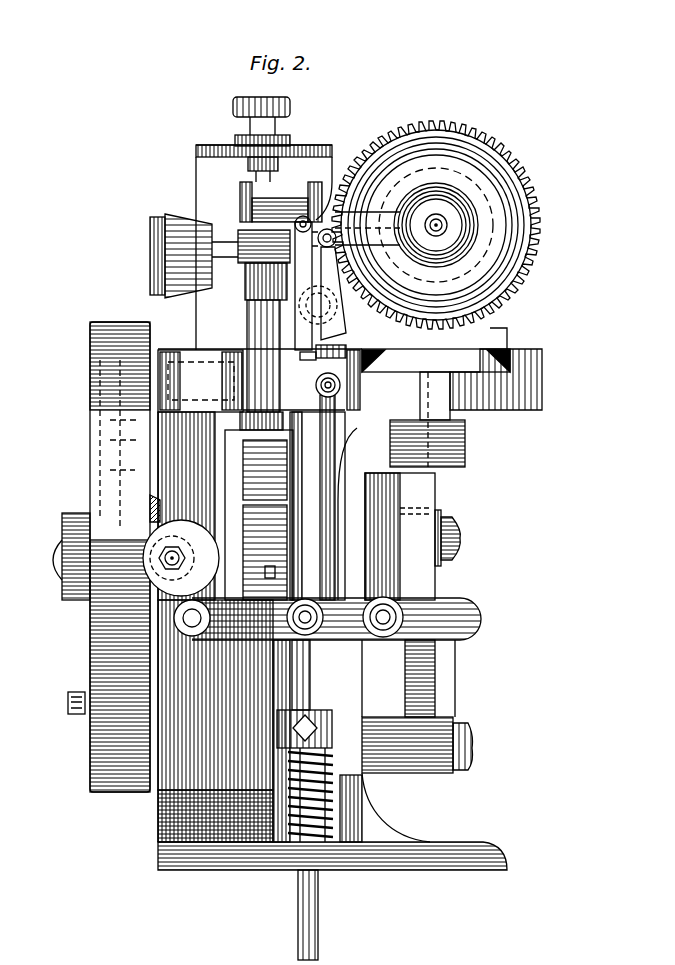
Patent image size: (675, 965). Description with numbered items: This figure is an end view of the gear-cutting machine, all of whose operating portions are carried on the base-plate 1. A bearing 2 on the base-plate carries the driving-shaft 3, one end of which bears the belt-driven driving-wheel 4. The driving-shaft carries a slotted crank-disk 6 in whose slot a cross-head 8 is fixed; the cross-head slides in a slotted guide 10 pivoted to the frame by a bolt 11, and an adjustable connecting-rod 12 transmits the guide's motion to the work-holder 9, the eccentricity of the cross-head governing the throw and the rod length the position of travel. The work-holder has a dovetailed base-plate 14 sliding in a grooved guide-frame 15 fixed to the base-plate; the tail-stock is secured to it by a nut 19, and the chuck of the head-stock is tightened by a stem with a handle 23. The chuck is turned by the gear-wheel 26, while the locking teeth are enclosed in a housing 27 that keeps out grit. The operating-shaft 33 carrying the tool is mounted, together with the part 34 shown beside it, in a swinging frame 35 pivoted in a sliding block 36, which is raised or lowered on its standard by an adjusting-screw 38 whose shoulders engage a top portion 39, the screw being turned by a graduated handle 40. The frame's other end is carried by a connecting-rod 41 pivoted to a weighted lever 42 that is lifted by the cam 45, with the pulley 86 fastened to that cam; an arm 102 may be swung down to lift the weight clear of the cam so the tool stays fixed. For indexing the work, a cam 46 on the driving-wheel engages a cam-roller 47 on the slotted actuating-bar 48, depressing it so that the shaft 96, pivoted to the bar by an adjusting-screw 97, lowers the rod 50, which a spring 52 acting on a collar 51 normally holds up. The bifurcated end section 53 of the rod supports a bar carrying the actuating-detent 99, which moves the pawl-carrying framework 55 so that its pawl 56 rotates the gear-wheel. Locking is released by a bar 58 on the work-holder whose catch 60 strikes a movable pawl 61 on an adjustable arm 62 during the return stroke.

The base-plate 1 is at (190, 793).
The bearing 2 is at (150, 500).
The driving-shaft 3 is at (345, 562).
The driving-wheel 4 is at (103, 498).
The slotted crank-disk 6 is at (392, 497).
The cross-head 8 is at (442, 520).
The work-holder 9 is at (509, 330).
The slotted guide 10 is at (456, 535).
The bolt 11 is at (463, 730).
The adjustable connecting-rod 12 is at (466, 440).
The dovetailed base-plate 14 is at (492, 362).
The guide-frame 15 is at (513, 393).
The nut 19 is at (193, 636).
The handle 23 is at (468, 217).
The gear-wheel 26 is at (531, 258).
The housing 27 is at (534, 228).
The operating-shaft 33 is at (233, 238).
The worm housing 34 is at (285, 212).
The swinging frame 35 is at (165, 238).
The sliding block 36 is at (198, 162).
The adjusting-screw 38 is at (255, 178).
The top portion 39 is at (205, 147).
The handle 40 is at (292, 103).
The connecting-rod 41 is at (258, 344).
The lever 42 is at (258, 473).
The cam 45 is at (238, 550).
The cam 46 is at (130, 662).
The cam-roller 47 is at (168, 584).
The actuating-bar 48 is at (463, 632).
The rod 50 is at (306, 657).
The collar 51 is at (325, 724).
The spring 52 is at (317, 767).
The bifurcated end section 53 is at (282, 268).
The pawl-carrying framework 55 is at (468, 224).
The pawl 56 is at (327, 312).
The bar 58 is at (387, 296).
The catch 60 is at (335, 350).
The movable pawl 61 is at (313, 351).
The adjustable arm 62 is at (330, 437).
The pulley 86 is at (268, 572).
The shaft 96 is at (481, 617).
The adjusting-screw 97 is at (395, 627).
The actuating-detent 99 is at (334, 178).
The arm 102 is at (191, 358).